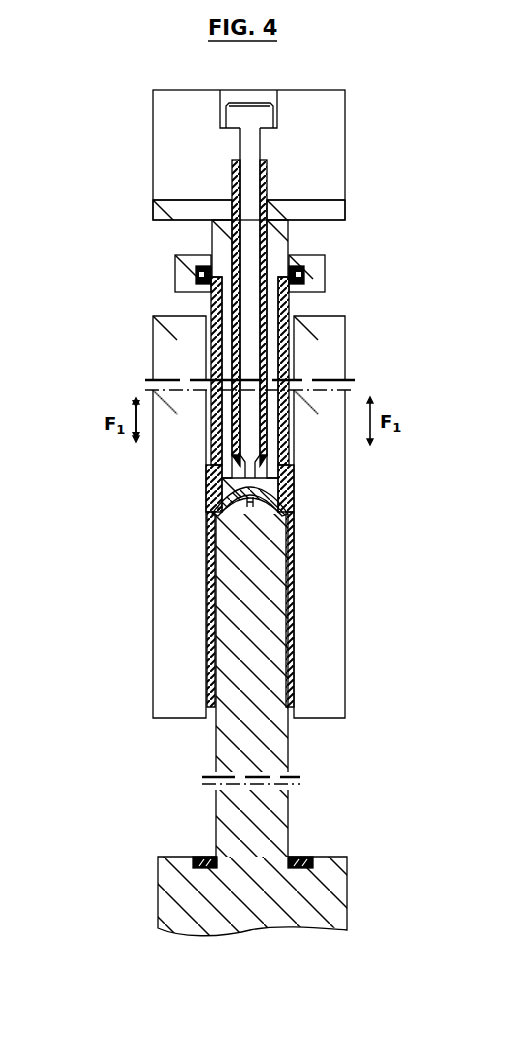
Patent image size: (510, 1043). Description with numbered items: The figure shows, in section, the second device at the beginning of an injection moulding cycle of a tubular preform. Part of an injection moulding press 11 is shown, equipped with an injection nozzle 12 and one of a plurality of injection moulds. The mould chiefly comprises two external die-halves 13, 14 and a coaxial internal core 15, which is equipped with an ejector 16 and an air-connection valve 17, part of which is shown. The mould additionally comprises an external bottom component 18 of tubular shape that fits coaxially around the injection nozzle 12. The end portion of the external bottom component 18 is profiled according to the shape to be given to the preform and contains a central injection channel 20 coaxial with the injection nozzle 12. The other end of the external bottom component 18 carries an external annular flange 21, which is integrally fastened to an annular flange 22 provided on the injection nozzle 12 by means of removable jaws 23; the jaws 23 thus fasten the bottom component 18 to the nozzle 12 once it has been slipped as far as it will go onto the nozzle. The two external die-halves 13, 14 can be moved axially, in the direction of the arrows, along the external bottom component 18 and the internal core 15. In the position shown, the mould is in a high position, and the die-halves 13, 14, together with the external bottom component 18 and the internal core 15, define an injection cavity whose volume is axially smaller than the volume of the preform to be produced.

The injection moulding press 11 is at (325, 136).
The injection nozzle 12 is at (276, 328).
The external die-half 13 is at (166, 483).
The external die-half 14 is at (327, 473).
The internal core 15 is at (283, 748).
The ejector 16 is at (305, 856).
The air-connection valve 17 is at (272, 506).
The external bottom component 18 is at (268, 300).
The central injection channel 20 is at (232, 486).
The external annular flange 21 is at (208, 292).
The annular flange 22 is at (196, 272).
The removable jaws 23 is at (180, 272).